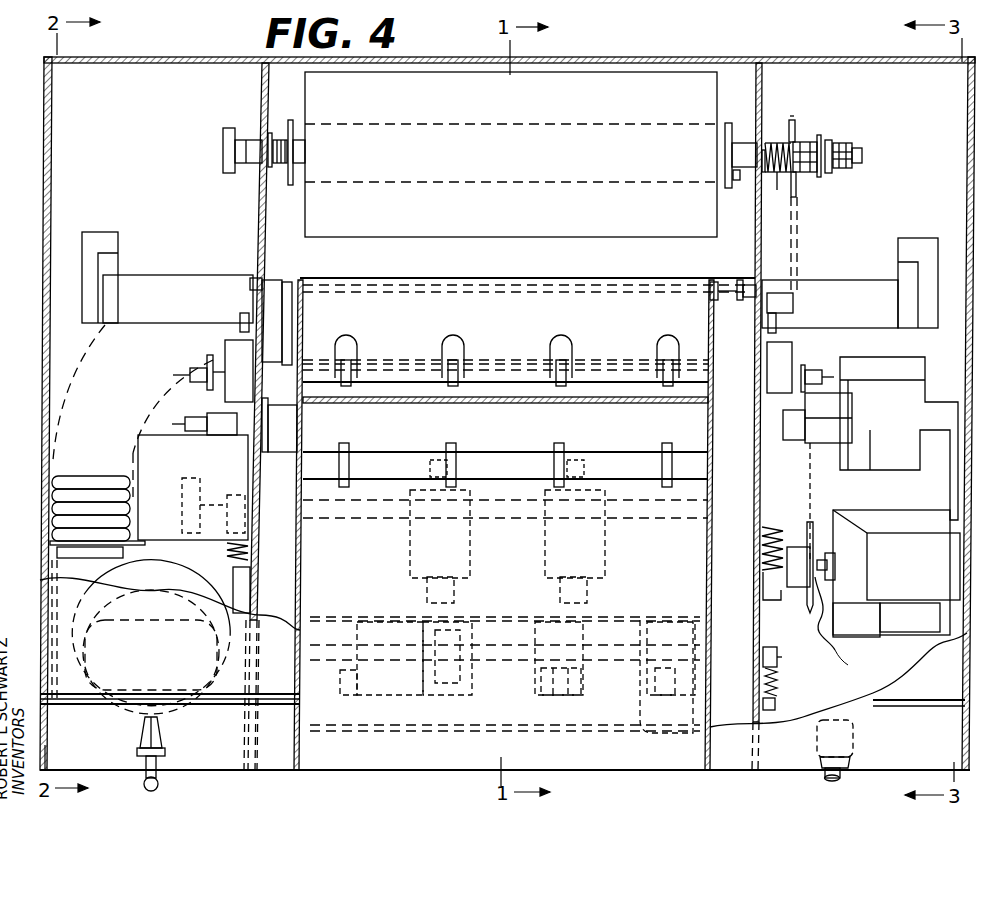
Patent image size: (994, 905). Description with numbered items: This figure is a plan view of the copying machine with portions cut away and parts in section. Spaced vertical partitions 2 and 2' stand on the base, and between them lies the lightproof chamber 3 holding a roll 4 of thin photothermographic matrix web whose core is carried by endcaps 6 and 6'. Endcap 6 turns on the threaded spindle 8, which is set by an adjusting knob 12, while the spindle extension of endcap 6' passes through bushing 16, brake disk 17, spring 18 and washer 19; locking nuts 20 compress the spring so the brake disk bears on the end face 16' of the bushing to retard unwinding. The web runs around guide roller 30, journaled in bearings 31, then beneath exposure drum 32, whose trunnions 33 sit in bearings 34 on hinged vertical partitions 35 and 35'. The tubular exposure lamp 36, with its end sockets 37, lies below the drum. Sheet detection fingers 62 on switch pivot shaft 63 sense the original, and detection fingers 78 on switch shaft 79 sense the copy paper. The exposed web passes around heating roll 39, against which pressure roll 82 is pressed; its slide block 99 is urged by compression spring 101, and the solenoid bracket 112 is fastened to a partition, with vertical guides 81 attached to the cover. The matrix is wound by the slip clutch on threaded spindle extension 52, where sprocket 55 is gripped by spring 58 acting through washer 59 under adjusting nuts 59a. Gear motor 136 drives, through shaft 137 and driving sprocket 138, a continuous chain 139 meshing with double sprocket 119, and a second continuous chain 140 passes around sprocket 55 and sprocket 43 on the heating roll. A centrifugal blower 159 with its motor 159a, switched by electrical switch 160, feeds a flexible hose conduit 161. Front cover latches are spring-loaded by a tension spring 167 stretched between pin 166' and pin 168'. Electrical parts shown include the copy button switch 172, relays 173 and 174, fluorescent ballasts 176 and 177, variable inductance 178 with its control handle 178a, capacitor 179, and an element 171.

The vertical partition 2 is at (507, 413).
The vertical partition 2' is at (768, 416).
The lightproof chamber 3 is at (538, 268).
The roll 4 is at (444, 162).
The endcap 6 is at (289, 159).
The endcap 6' is at (715, 165).
The threaded spindle 8 is at (280, 142).
The adjusting knob 12 is at (222, 152).
The bushing 16 is at (741, 143).
The end face of the bushing 16' is at (747, 179).
The brake disk 17 is at (772, 176).
The spring 18 is at (779, 190).
The washer 19 is at (797, 185).
The locking nuts 20 is at (819, 177).
The sprocket 55 is at (795, 125).
The spring 58 is at (812, 142).
The washer 59 is at (840, 168).
The adjusting nuts 59a is at (830, 142).
The threaded spindle extension 52 is at (862, 153).
The second continuous chain 140 is at (797, 241).
The end sockets 37 is at (105, 231).
The tubular exposure lamp 36 is at (160, 325).
The bearings 31 is at (272, 268).
The guide roller 30 is at (284, 277).
The exposure drum 32 is at (716, 283).
The hinged vertical partition 35' is at (799, 295).
The trunnions 33 is at (244, 314).
The bearings 34 is at (797, 349).
The hinged vertical partition 35 is at (229, 364).
The heating roll 39 is at (210, 352).
The sprocket 43 is at (818, 364).
The sheet detection fingers 62 is at (552, 366).
The switch pivot shaft 63 is at (606, 378).
The pressure roll 82 is at (505, 433).
The detection fingers 78 is at (660, 448).
The switch shaft 79 is at (520, 478).
The double sprocket 119 is at (816, 450).
The slide block 99 is at (827, 501).
The continuous chain 139 is at (818, 512).
The gear motor 136 is at (928, 571).
The compression spring 101 is at (762, 548).
The shaft 137 is at (835, 650).
The driving sprocket 138 is at (844, 667).
The pin 166' is at (798, 654).
The tension spring 167 is at (778, 677).
The pin 168' is at (798, 703).
The copy button switch 172 is at (858, 750).
The solenoid bracket 112 is at (162, 455).
The flexible hose conduit 161 is at (100, 480).
The centrifugal blower 159 is at (42, 572).
The motor 159a is at (178, 588).
The variable inductance 178 is at (258, 670).
The control handle 178a is at (138, 745).
The electrical switch 160 is at (162, 782).
The vertical guides 81 is at (303, 584).
The fluorescent ballast 176 is at (460, 572).
The fluorescent ballast 177 is at (556, 578).
The block 171 is at (343, 702).
The capacitor 179 is at (452, 695).
The relay 173 is at (559, 693).
The relay 174 is at (663, 676).